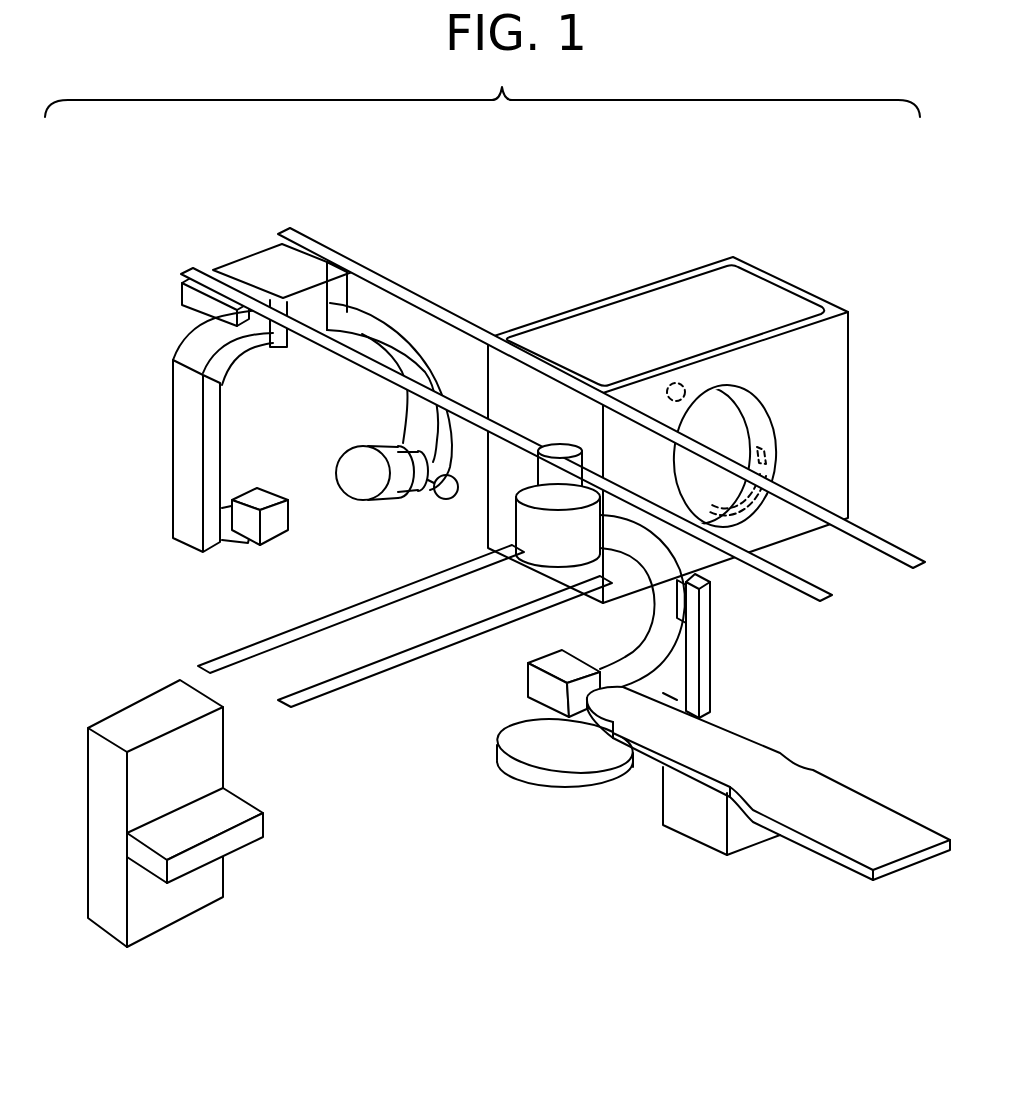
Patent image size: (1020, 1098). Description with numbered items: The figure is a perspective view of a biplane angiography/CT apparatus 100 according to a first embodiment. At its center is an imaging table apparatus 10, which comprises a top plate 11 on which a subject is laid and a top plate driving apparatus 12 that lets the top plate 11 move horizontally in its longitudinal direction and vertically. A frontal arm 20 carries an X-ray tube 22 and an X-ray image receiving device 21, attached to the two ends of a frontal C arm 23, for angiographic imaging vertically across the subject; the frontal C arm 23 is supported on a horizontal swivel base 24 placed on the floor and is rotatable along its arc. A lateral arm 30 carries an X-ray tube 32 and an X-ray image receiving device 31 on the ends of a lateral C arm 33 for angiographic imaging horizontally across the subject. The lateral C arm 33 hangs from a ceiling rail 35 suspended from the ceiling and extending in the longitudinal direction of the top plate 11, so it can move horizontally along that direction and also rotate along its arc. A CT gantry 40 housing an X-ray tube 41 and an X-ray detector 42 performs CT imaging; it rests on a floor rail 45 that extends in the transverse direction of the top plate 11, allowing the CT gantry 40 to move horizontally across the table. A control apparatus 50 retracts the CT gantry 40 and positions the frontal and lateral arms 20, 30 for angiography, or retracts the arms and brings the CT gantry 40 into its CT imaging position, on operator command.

The biplane angiography/CT apparatus 100 is at (408, 214).
The imaging table apparatus 10 is at (768, 826).
The top plate 11 is at (783, 800).
The top plate driving apparatus 12 is at (767, 886).
The frontal arm 20 is at (506, 650).
The X-ray image receiving device 21 is at (547, 547).
The X-ray tube 22 is at (541, 689).
The frontal C arm 23 is at (633, 650).
The horizontal swivel base 24 is at (547, 762).
The lateral arm 30 is at (249, 447).
The X-ray image receiving device 31 is at (368, 487).
The X-ray tube 32 is at (273, 532).
The lateral C arm 33 is at (240, 347).
The ceiling rail 35 is at (428, 310).
The CT gantry 40 is at (668, 371).
The X-ray tube 41 is at (675, 383).
The X-ray detector 42 is at (775, 448).
The floor rail 45 is at (357, 675).
The control apparatus 50 is at (235, 838).